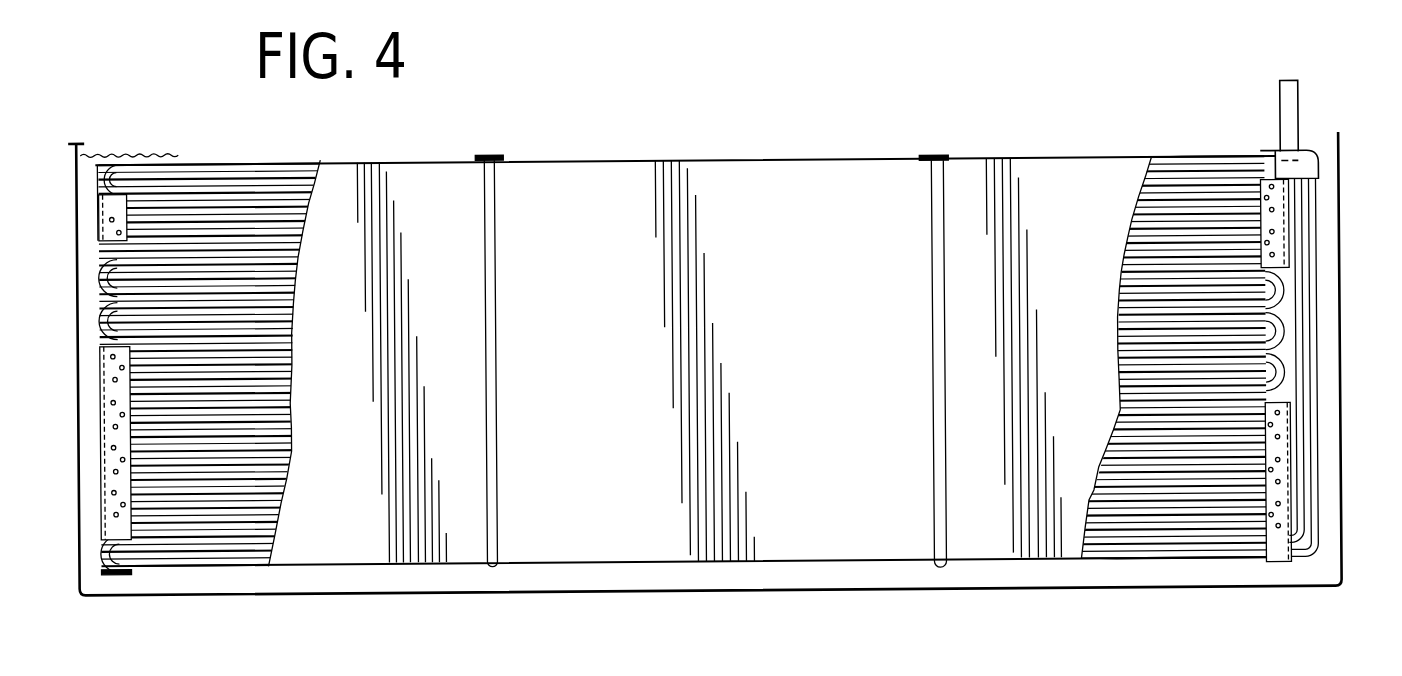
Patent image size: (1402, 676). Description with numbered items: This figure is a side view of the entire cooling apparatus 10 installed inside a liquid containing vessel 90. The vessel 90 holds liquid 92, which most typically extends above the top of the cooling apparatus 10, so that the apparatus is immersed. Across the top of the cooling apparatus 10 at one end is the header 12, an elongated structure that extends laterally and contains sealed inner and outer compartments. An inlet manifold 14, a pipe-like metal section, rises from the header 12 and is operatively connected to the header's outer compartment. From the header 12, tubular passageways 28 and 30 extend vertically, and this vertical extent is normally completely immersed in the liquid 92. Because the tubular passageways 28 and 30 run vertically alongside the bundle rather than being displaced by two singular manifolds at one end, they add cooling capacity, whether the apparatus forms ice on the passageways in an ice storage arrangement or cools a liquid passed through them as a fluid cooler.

The cooling apparatus 10 is at (1017, 140).
The header 12 is at (1320, 170).
The inlet manifold 14 is at (1300, 115).
The tubular passageway 28 is at (1304, 245).
The tubular passageway 30 is at (1317, 219).
The liquid containing vessel 90 is at (1340, 313).
The liquid 92 is at (138, 149).